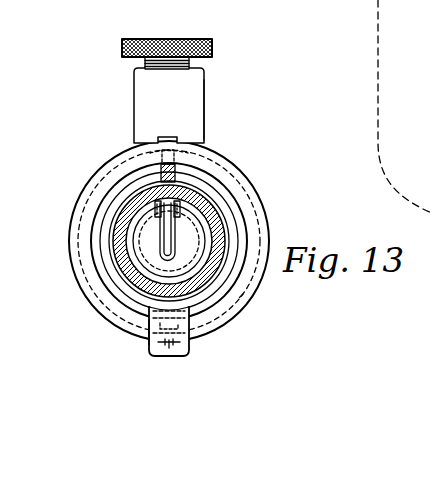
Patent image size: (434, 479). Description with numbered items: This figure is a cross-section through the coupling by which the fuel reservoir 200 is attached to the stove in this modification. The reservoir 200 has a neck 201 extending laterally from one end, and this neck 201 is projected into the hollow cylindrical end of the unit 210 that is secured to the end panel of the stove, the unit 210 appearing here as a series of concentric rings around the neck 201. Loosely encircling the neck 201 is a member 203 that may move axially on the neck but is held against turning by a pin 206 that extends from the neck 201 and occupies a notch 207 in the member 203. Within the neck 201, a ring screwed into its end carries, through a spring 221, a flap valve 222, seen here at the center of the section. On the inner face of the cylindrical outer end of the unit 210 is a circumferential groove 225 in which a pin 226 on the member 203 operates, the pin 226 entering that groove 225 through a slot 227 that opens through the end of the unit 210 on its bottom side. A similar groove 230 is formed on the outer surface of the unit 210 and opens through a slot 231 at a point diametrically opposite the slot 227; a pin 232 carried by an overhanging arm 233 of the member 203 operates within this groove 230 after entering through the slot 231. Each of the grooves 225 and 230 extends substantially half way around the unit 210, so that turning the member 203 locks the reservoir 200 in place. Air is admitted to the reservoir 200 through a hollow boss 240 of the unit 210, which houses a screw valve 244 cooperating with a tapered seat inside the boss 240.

The reservoir 200 is at (378, 82).
The neck 201 is at (216, 211).
The member 203 is at (103, 267).
The pin 206 is at (189, 154).
The notch 207 is at (157, 171).
The unit 210 is at (266, 223).
The spring 221 is at (213, 197).
The flap valve 222 is at (150, 240).
The circumferential groove 225 is at (243, 294).
The pin 226 is at (206, 129).
The slot 227 is at (142, 335).
The groove 230 is at (80, 185).
The slot 231 is at (169, 138).
The pin 232 is at (180, 356).
The overhanging arm 233 is at (189, 337).
The hollow boss 240 is at (141, 85).
The screw valve 244 is at (190, 39).